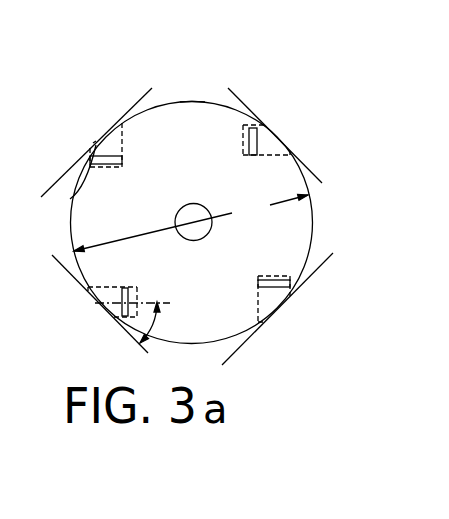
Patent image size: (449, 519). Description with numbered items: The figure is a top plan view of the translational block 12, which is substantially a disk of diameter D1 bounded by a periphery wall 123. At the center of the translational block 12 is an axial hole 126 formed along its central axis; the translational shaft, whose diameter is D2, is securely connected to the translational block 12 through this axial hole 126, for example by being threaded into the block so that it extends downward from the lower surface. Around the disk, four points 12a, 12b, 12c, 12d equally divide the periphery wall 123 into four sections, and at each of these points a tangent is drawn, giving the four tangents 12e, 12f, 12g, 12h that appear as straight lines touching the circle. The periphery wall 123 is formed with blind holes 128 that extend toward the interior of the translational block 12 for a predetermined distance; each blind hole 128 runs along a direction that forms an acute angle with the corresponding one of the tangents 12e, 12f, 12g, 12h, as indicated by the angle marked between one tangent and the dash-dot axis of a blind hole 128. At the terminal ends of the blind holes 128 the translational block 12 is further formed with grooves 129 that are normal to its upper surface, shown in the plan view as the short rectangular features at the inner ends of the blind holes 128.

The translational block 12 is at (168, 100).
The periphery wall 123 is at (192, 103).
The point 12a is at (277, 137).
The point 12b is at (102, 137).
The point 12c is at (101, 305).
The point 12d is at (278, 310).
The tangent 12e is at (242, 101).
The tangent 12f is at (150, 89).
The tangent 12g is at (72, 275).
The tangent 12h is at (247, 341).
The axial hole 126 is at (186, 238).
The blind hole 128 is at (93, 143).
The groove 129 is at (70, 199).
The diameter of the translational block D1 is at (191, 223).
The diameter of the translational shaft D2 is at (179, 202).